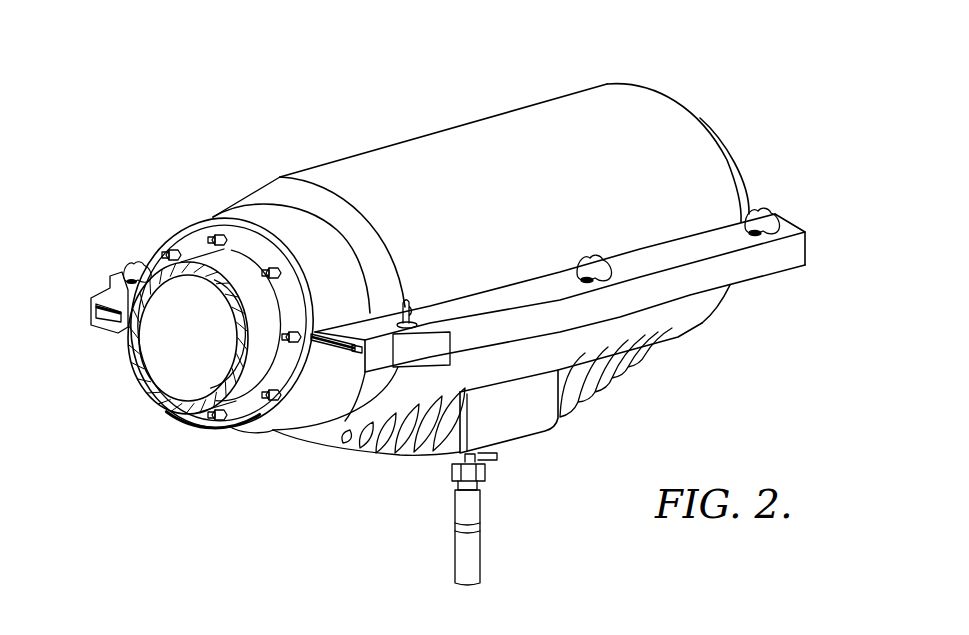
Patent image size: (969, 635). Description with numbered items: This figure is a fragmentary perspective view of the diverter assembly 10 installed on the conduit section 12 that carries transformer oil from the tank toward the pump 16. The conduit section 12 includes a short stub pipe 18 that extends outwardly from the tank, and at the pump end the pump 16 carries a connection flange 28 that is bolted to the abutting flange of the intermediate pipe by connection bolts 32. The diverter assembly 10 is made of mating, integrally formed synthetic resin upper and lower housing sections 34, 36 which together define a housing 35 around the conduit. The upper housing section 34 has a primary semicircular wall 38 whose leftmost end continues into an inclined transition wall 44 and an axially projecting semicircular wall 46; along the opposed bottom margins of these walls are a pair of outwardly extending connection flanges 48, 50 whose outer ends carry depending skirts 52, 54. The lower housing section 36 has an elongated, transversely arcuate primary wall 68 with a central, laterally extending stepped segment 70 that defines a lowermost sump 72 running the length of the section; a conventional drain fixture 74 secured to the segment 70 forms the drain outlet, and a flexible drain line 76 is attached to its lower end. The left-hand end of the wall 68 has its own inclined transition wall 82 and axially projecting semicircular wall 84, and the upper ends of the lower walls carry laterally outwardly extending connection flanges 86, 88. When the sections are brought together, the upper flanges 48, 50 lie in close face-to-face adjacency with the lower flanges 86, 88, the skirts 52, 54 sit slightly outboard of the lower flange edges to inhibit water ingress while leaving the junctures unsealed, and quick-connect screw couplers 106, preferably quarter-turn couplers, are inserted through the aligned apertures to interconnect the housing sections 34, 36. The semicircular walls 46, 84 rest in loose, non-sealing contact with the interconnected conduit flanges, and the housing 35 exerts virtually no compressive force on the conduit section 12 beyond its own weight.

The diverter assembly 10 is at (298, 76).
The conduit section 12 is at (737, 122).
The pump 16 is at (150, 387).
The stub pipe 18 is at (748, 172).
The connection flange 28 is at (258, 250).
The connection bolts 32 is at (286, 272).
The upper housing section 34 is at (649, 70).
The housing 35 is at (431, 110).
The lower housing section 36 is at (705, 357).
The primary semicircular wall 38 is at (527, 128).
The inclined transition wall 44 is at (248, 198).
The semicircular wall 46 is at (198, 226).
The connection flange 48 is at (118, 283).
The connection flange 50 is at (534, 293).
The depending skirt 52 is at (102, 322).
The depending skirt 54 is at (790, 266).
The primary wall 68 is at (697, 308).
The stepped segment 70 is at (592, 392).
The sump 72 is at (515, 425).
The drain fixture 74 is at (497, 453).
The flexible drain line 76 is at (462, 550).
The inclined transition wall 82 is at (320, 422).
The semicircular wall 84 is at (253, 427).
The connection flange 86 is at (118, 314).
The connection flange 88 is at (340, 347).
The quick-connect screw couplers 106 is at (772, 211).